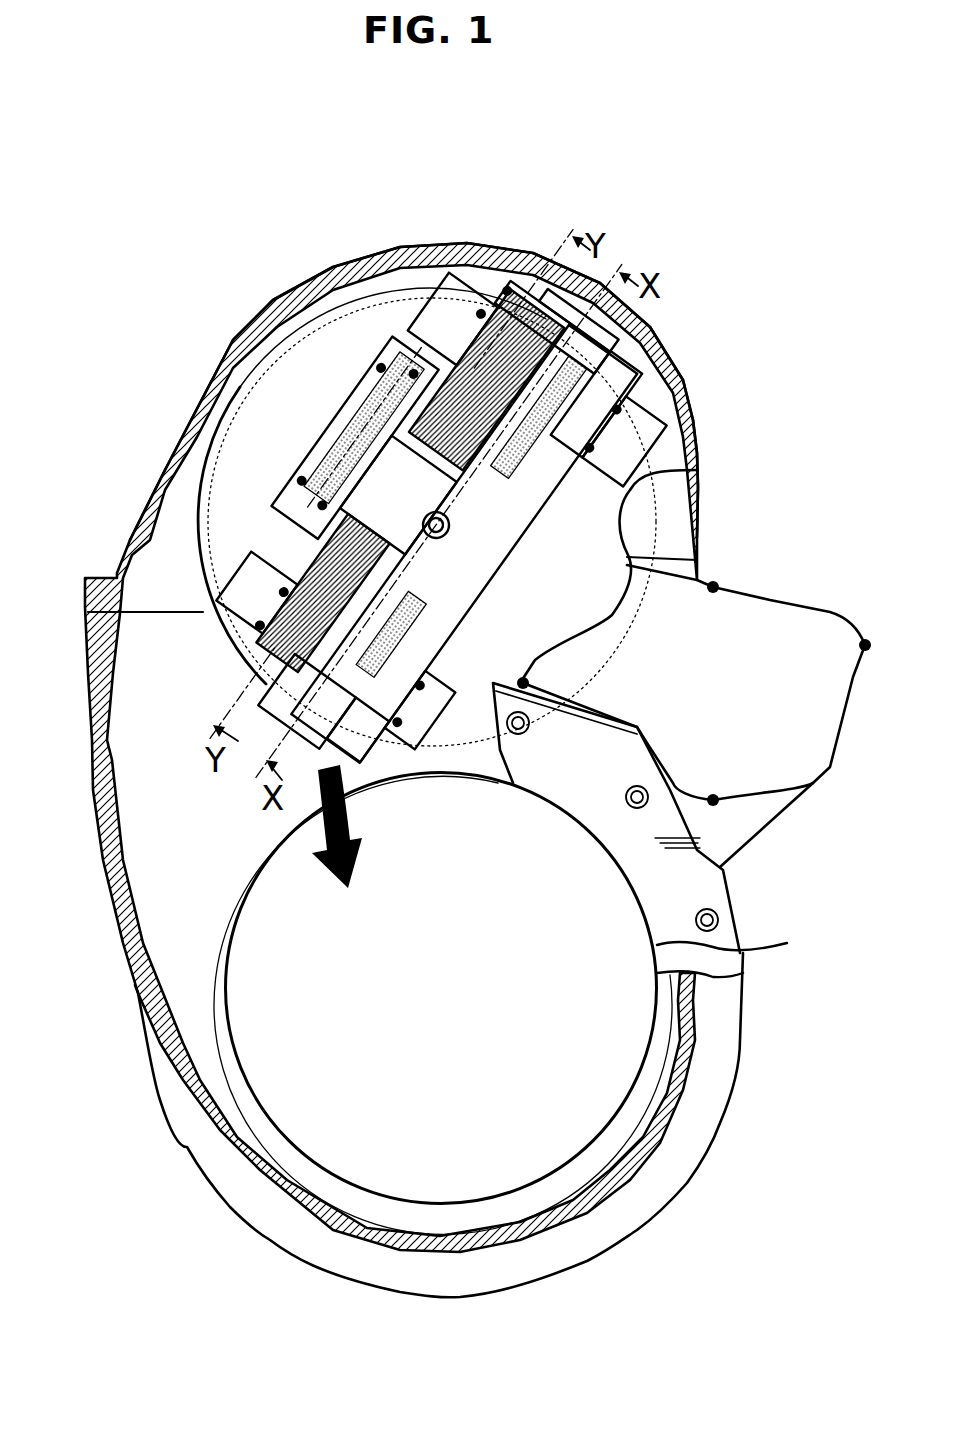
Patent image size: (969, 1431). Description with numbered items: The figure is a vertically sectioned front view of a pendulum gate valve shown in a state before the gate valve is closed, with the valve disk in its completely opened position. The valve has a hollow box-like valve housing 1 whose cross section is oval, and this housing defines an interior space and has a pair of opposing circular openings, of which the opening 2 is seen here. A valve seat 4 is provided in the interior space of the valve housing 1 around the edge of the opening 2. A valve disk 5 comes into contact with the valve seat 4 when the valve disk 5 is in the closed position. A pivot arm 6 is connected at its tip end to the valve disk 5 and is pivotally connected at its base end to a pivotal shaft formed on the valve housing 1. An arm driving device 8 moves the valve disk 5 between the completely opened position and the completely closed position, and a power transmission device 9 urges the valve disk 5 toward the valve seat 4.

The valve housing 1 is at (97, 753).
The circular opening 2 is at (514, 1004).
The valve seat 4 is at (665, 873).
The valve disk 5 is at (307, 370).
The pivot arm 6 is at (560, 583).
The arm driving device 8 is at (805, 758).
The power transmission device 9 is at (507, 247).